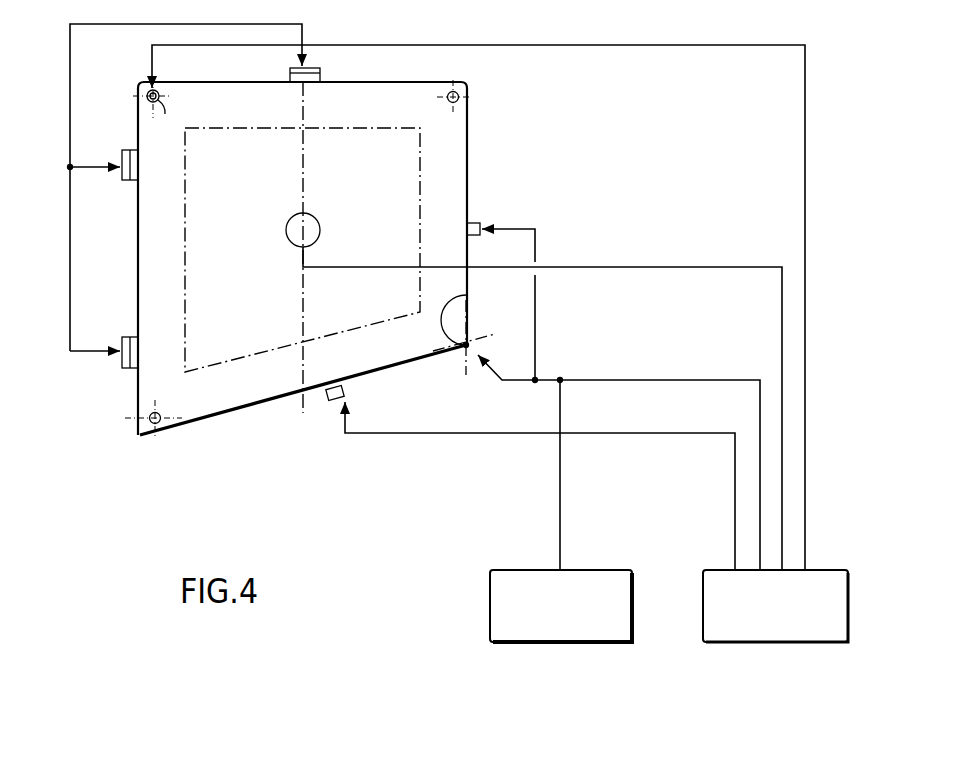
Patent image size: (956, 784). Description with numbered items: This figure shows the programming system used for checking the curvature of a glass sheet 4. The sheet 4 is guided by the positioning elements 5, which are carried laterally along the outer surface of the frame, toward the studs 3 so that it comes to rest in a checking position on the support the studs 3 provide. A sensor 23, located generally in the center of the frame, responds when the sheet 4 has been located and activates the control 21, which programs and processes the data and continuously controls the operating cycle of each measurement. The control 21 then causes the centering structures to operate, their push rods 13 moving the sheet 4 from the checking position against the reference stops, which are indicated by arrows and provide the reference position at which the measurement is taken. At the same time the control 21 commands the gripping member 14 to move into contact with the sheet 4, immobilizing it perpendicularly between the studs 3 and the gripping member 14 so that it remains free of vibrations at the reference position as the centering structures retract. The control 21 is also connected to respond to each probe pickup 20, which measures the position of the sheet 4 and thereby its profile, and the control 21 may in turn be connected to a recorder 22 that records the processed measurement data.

The stud 3 is at (457, 92).
The sheet 4 is at (222, 398).
The positioning element 5 is at (321, 78).
The push rod 13 is at (158, 91).
The gripping member 14 is at (165, 114).
The probe pickup 20 is at (466, 295).
The control 21 is at (775, 606).
The recorder 22 is at (561, 606).
The sensor 23 is at (290, 223).